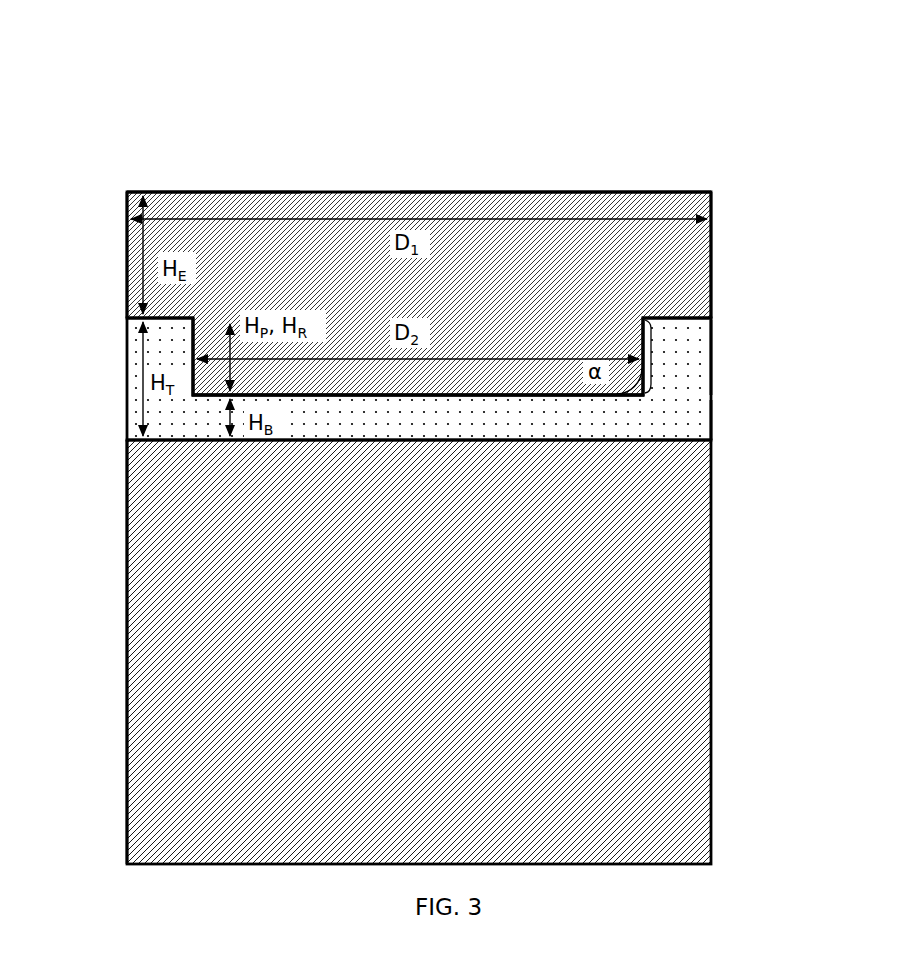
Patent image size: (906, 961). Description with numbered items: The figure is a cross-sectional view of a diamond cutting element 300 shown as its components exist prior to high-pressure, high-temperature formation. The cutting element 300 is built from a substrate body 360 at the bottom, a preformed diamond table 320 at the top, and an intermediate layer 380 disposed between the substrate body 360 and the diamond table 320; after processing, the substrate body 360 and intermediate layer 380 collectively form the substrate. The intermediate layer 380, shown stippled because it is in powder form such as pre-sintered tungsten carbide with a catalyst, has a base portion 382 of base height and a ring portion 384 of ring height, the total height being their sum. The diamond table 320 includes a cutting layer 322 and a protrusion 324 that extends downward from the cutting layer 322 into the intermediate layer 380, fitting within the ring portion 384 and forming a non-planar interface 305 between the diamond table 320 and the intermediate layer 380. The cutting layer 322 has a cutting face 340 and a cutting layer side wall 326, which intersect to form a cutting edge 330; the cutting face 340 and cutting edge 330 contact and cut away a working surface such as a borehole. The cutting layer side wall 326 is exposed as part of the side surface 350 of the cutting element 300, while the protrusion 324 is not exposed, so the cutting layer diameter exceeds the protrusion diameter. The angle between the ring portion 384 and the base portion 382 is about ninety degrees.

The cutting element 300 is at (208, 68).
The non-planar interface 305 is at (638, 338).
The preformed diamond table 320 is at (419, 293).
The cutting layer 322 is at (727, 192).
The protrusion 324 is at (654, 342).
The cutting layer side wall 326 is at (121, 251).
The cutting edge 330 is at (126, 191).
The cutting face 340 is at (477, 189).
The side surface 350 is at (124, 578).
The substrate body 360 is at (419, 652).
The intermediate layer 380 is at (419, 379).
The base portion 382 is at (727, 400).
The ring portion 384 is at (727, 320).